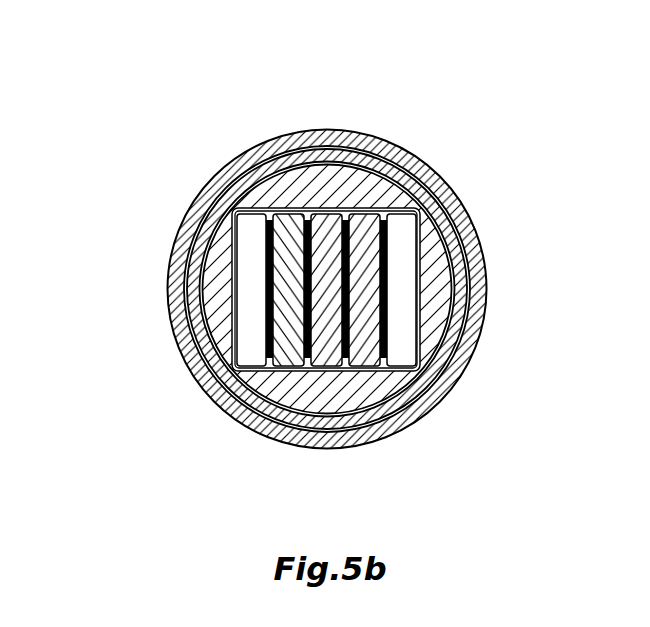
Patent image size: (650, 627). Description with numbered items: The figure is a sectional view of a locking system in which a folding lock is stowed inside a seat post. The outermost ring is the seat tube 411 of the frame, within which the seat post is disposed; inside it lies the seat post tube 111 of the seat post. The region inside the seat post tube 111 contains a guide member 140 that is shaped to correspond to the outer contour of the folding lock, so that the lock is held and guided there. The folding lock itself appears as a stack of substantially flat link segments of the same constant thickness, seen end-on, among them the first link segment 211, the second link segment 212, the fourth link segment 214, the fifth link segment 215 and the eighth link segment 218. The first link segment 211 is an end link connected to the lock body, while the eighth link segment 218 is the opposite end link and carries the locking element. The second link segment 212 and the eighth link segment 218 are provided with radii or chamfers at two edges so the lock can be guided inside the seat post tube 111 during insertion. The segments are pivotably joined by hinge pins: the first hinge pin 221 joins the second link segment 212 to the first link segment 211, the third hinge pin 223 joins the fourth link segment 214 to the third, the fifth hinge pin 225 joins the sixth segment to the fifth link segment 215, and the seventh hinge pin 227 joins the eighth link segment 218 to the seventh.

The seat post tube 111 is at (457, 300).
The guide member 140 is at (215, 322).
The first link segment 211 is at (375, 203).
The second link segment 212 is at (403, 237).
The fourth link segment 214 is at (320, 218).
The fifth link segment 215 is at (292, 160).
The eighth link segment 218 is at (243, 277).
The first hinge pin 221 is at (382, 362).
The third hinge pin 223 is at (362, 222).
The fifth hinge pin 225 is at (286, 218).
The seventh hinge pin 227 is at (272, 360).
The seat tube 411 is at (443, 383).